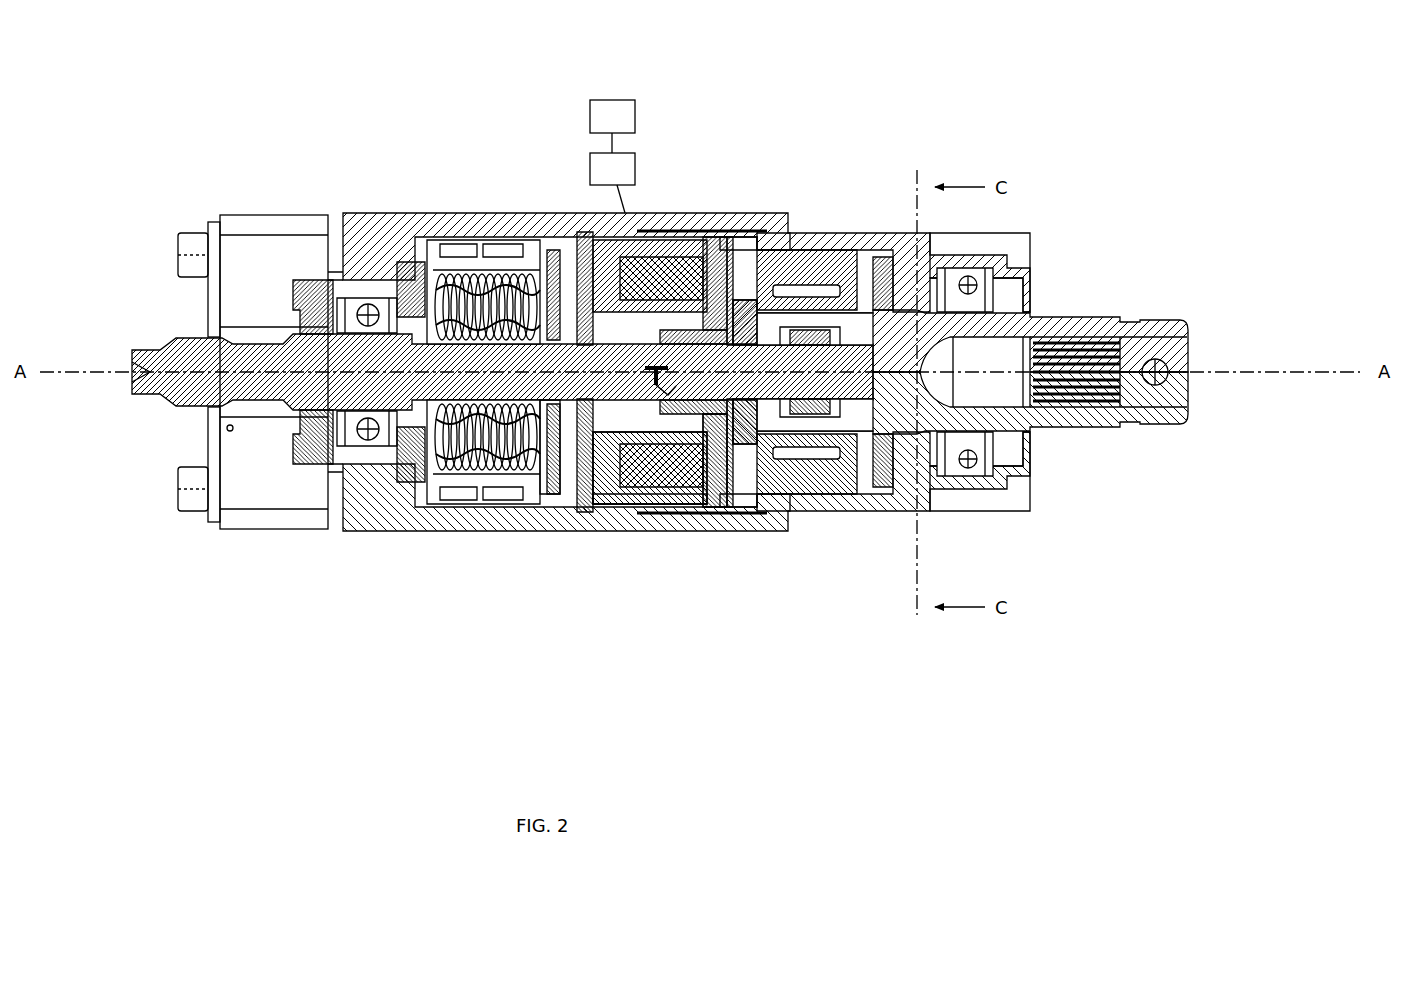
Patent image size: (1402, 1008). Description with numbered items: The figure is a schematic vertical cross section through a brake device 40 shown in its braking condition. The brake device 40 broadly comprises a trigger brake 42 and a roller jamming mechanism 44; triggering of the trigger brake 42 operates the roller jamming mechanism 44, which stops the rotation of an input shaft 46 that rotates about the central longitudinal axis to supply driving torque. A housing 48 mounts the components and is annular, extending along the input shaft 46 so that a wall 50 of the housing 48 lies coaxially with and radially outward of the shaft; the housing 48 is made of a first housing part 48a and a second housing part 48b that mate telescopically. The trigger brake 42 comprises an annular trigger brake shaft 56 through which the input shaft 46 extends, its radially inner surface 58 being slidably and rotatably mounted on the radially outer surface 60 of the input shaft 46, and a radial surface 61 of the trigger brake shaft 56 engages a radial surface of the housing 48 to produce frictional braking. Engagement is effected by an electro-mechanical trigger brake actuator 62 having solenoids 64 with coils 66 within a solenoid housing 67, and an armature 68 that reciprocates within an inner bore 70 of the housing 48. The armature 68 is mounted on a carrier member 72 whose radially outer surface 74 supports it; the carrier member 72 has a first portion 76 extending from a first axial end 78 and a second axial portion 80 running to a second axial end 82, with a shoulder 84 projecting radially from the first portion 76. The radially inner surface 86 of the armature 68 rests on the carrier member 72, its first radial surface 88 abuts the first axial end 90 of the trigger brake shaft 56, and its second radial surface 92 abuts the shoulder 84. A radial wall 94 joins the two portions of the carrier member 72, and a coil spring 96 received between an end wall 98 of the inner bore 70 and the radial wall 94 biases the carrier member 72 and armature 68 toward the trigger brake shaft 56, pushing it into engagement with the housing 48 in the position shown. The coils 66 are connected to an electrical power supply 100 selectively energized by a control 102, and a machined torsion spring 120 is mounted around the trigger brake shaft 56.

The brake device 40 is at (860, 632).
The trigger brake 42 is at (778, 563).
The roller jamming mechanism 44 is at (933, 542).
The input shaft 46 is at (1072, 430).
The housing 48 is at (375, 542).
The first housing part 48a is at (997, 497).
The second housing part 48b is at (390, 543).
The wall 50 is at (853, 233).
The trigger brake shaft 56 is at (867, 520).
The radially inner surface 58 is at (763, 520).
The radially outer surface 60 is at (750, 263).
The radial surface 61 is at (897, 520).
The trigger brake actuator 62 is at (600, 552).
The solenoid 64 is at (672, 213).
The coil 66 is at (704, 213).
The solenoid housing 67 is at (597, 520).
The armature 68 is at (735, 213).
The inner bore 70 is at (790, 222).
The carrier member 72 is at (553, 520).
The radially outer surface 74 is at (571, 213).
The first portion 76 is at (547, 213).
The first axial end 78 is at (733, 520).
The second axial portion 80 is at (478, 213).
The second axial end 82 is at (432, 213).
The shoulder 84 is at (670, 520).
The radially inner surface 86 is at (763, 217).
The first radial surface 88 is at (768, 520).
The first axial end 90 is at (762, 215).
The second radial surface 92 is at (693, 520).
The radial wall 94 is at (530, 530).
The coil spring 96 is at (440, 522).
The end wall 98 is at (413, 520).
The electrical power supply 100 is at (637, 162).
The control 102 is at (637, 110).
The torsion spring 120 is at (820, 520).